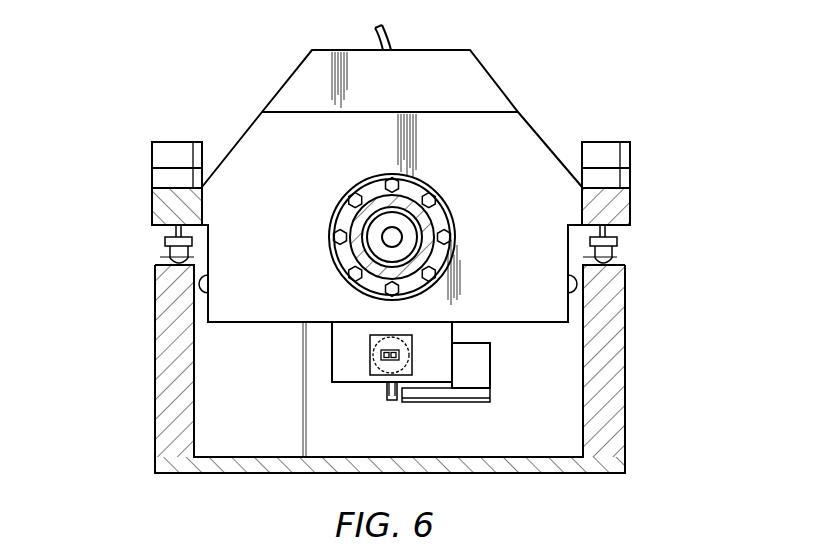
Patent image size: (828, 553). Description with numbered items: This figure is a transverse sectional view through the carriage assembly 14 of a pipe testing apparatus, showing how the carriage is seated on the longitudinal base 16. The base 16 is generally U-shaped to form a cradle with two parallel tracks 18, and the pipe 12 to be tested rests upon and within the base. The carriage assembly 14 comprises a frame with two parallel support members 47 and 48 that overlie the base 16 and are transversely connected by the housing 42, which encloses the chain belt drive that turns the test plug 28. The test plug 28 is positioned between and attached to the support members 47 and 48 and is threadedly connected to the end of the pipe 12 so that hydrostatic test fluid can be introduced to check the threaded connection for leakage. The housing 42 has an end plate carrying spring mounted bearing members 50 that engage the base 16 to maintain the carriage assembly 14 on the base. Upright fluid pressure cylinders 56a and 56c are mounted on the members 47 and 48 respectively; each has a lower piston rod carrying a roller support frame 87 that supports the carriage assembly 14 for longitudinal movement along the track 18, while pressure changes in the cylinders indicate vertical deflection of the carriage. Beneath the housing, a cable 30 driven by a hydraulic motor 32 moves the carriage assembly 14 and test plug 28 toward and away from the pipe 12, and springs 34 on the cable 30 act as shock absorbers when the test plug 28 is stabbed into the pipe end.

The pipe 12 is at (362, 215).
The carriage assembly 14 is at (532, 108).
The longitudinal base 16 is at (153, 420).
The parallel tracks 18 is at (163, 258).
The test plug 28 is at (392, 237).
The cable 30 is at (395, 357).
The hydraulic motor 32 is at (480, 375).
The springs 34 is at (405, 348).
The housing 42 is at (292, 95).
The support member 47 is at (165, 207).
The support member 48 is at (615, 207).
The spring mounted bearing members 50 is at (204, 294).
The upright fluid pressure cylinder 56a is at (160, 160).
The upright fluid pressure cylinder 56c is at (630, 161).
The roller support frame 87 is at (165, 240).